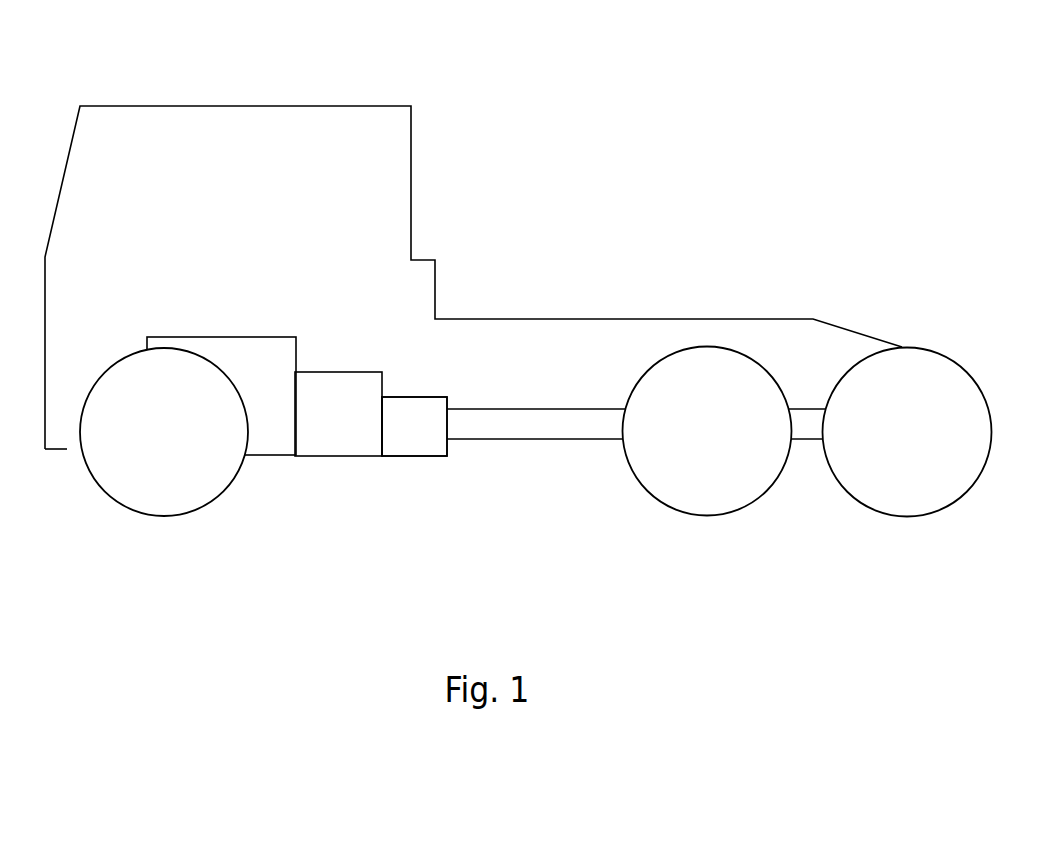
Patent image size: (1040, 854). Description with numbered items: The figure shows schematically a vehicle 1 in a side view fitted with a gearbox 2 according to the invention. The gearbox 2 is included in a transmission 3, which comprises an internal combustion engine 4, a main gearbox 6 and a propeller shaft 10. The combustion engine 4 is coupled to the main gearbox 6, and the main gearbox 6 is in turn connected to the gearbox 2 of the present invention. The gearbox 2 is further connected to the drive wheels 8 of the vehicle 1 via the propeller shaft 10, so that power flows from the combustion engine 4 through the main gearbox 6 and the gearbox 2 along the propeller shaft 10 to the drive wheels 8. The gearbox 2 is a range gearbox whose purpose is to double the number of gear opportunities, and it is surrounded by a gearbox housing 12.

The vehicle 1 is at (522, 85).
The gearbox 2 is at (413, 397).
The transmission 3 is at (328, 534).
The internal combustion engine 4 is at (192, 337).
The main gearbox 6 is at (338, 372).
The drive wheels 8 is at (752, 502).
The propeller shaft 10 is at (535, 439).
The gearbox housing 12 is at (417, 458).